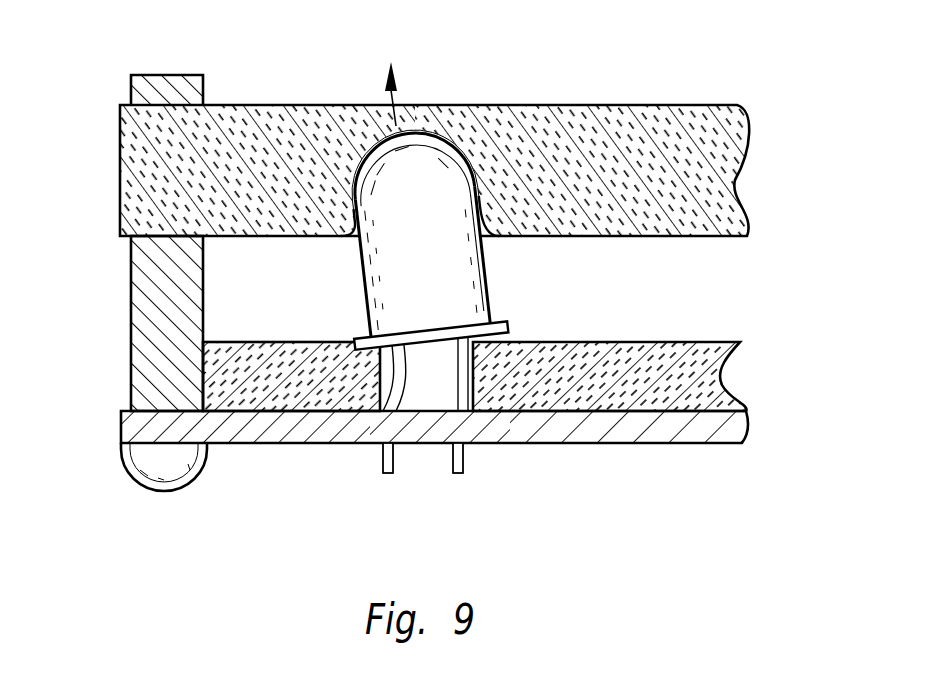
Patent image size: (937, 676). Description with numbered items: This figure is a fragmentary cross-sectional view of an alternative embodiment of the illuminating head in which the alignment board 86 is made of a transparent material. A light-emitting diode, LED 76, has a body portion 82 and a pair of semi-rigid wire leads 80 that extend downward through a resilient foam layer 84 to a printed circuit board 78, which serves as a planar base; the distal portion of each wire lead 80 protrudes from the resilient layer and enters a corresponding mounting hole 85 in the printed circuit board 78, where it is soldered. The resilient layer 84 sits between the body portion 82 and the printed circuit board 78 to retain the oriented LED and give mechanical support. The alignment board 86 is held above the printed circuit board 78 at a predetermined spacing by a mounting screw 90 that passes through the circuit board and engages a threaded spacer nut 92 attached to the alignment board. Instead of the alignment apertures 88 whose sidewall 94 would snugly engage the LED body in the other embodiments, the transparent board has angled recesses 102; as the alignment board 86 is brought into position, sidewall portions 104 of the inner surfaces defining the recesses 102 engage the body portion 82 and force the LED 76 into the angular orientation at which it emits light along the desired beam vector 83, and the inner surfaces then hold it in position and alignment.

The light-emitting diode 76 is at (508, 319).
The printed circuit board 78 is at (123, 431).
The semi-rigid wire leads 80 is at (397, 369).
The body portion 82 is at (364, 160).
The beam vector 83 is at (397, 100).
The resilient foam layer 84 is at (737, 398).
The mounting hole 85 is at (383, 452).
The alignment board 86 is at (678, 222).
The alignment aperture 88 is at (382, 193).
The mounting screw 90 is at (143, 486).
The threaded spacer nut 92 is at (152, 318).
The sidewall 94 is at (351, 196).
The angled recess 102 is at (362, 232).
The sidewall portion 104 is at (356, 172).